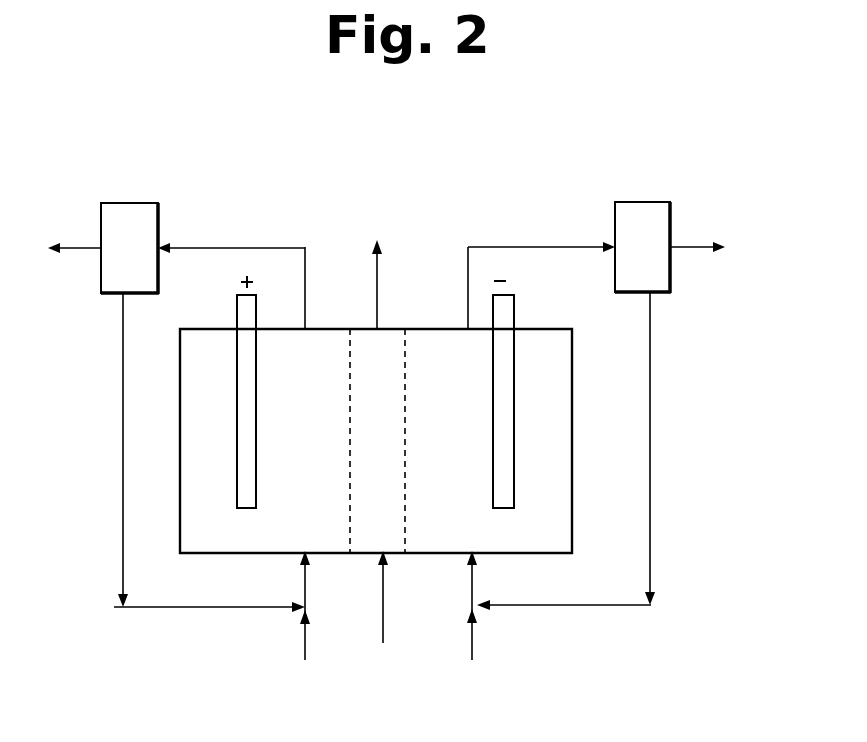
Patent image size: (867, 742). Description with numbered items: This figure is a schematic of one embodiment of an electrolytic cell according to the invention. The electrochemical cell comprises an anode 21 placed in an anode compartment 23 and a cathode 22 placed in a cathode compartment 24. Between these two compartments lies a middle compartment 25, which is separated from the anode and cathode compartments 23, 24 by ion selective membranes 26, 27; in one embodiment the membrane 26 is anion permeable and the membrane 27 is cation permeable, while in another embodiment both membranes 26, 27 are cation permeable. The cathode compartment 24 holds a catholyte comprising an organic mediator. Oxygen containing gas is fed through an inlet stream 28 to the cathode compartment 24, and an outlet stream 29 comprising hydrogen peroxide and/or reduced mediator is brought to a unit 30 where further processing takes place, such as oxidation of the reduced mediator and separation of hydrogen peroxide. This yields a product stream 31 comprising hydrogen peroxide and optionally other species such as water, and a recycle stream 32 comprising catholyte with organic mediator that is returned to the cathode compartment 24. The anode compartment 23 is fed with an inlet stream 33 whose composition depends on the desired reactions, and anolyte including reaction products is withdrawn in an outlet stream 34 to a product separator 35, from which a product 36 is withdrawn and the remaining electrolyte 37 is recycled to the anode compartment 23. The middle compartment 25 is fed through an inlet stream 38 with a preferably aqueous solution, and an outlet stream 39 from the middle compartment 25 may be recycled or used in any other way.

The anode 21 is at (245, 338).
The cathode 22 is at (505, 310).
The anode compartment 23 is at (202, 400).
The cathode compartment 24 is at (538, 398).
The middle compartment 25 is at (384, 360).
The ion selective membrane 26 is at (350, 538).
The ion selective membrane 27 is at (405, 518).
The inlet stream 28 is at (483, 650).
The outlet stream 29 is at (488, 245).
The unit 30 is at (648, 238).
The product stream 31 is at (703, 255).
The recycle stream 32 is at (651, 518).
The inlet stream 33 is at (295, 633).
The outlet stream 34 is at (262, 245).
The product separator 35 is at (137, 238).
The product 36 is at (77, 247).
The remaining electrolyte 37 is at (127, 543).
The inlet stream 38 is at (395, 615).
The outlet stream 39 is at (377, 288).